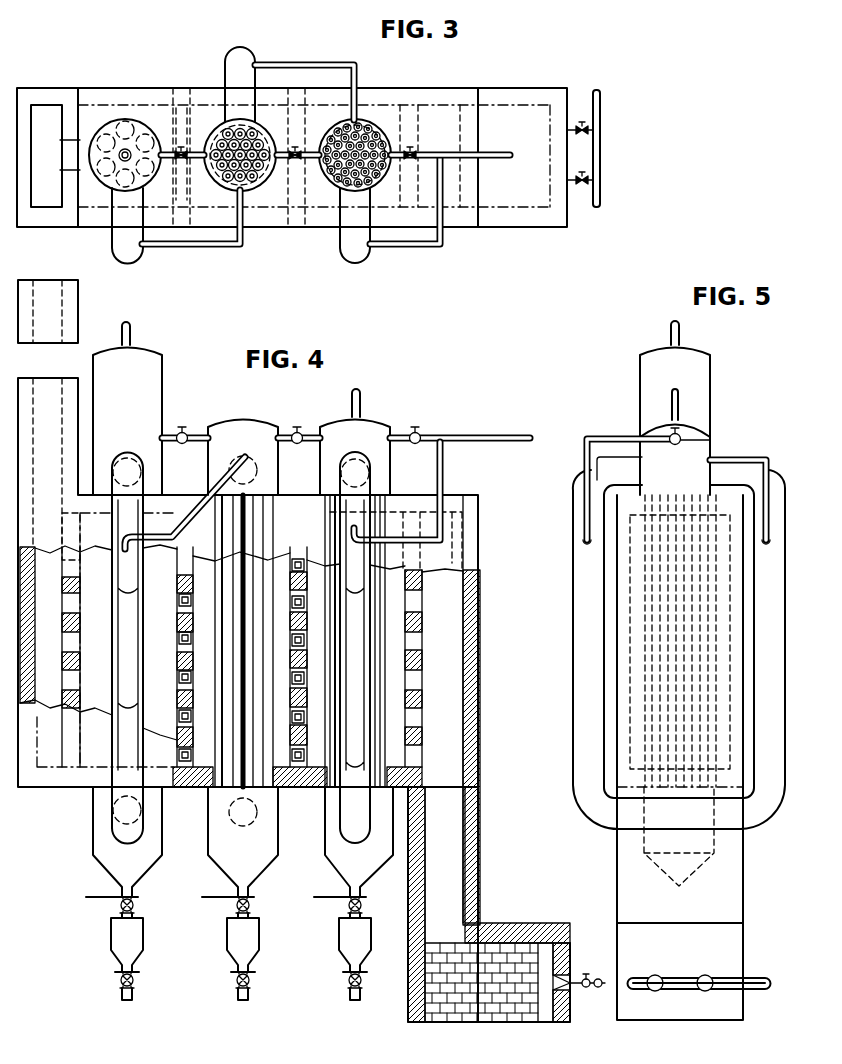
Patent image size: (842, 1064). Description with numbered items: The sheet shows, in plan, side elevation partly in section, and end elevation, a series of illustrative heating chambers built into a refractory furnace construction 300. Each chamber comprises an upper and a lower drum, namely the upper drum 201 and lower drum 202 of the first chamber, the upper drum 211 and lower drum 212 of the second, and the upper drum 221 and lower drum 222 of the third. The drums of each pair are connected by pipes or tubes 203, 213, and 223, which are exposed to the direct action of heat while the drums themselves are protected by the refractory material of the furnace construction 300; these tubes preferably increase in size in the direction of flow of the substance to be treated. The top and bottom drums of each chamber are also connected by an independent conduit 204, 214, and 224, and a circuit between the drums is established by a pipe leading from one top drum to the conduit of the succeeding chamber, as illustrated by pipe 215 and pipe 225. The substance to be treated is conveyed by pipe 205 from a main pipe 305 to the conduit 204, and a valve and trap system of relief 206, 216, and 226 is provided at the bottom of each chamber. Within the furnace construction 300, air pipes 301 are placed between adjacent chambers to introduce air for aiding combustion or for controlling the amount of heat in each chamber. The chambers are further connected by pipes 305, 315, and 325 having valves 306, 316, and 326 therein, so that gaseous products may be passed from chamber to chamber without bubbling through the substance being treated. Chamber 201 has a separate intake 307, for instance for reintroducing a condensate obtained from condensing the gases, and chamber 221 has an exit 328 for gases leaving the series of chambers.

In FIG. 3, the upper drum 201 is at (374, 184).
In FIG. 4, the upper drum 201 is at (362, 424).
In FIG. 5, the upper drum 201 is at (700, 445).
In FIG. 4, the lower drum 202 is at (350, 866).
In FIG. 5, the lower drum 202 is at (650, 838).
In FIG. 3, the pipes or tubes 203 is at (366, 120).
In FIG. 4, the pipes or tubes 203 is at (380, 710).
In FIG. 5, the pipes or tubes 203 is at (655, 570).
In FIG. 3, the independent conduit 204 is at (358, 253).
In FIG. 4, the independent conduit 204 is at (372, 470).
In FIG. 5, the independent conduit 204 is at (580, 655).
In FIG. 3, the pipe 205 is at (428, 248).
In FIG. 4, the pipe 205 is at (450, 477).
In FIG. 5, the pipe 205 is at (628, 440).
In FIG. 4, the valve and trap system of relief 206 is at (350, 938).
In FIG. 3, the upper drum 211 is at (264, 183).
In FIG. 4, the upper drum 211 is at (246, 424).
In FIG. 4, the lower drum 212 is at (232, 866).
In FIG. 3, the pipes or tubes 213 is at (262, 128).
In FIG. 4, the pipes or tubes 213 is at (262, 510).
In FIG. 3, the independent conduit 214 is at (241, 58).
In FIG. 4, the independent conduit 214 is at (252, 466).
In FIG. 5, the independent conduit 214 is at (775, 836).
In FIG. 3, the pipe 215 is at (318, 66).
In FIG. 4, the pipe 215 is at (360, 478).
In FIG. 5, the pipe 215 is at (755, 463).
In FIG. 4, the valve and trap system of relief 216 is at (236, 938).
In FIG. 3, the upper drum 221 is at (147, 182).
In FIG. 4, the upper drum 221 is at (140, 352).
In FIG. 5, the upper drum 221 is at (700, 380).
In FIG. 4, the lower drum 222 is at (105, 845).
In FIG. 3, the pipes or tubes 223 is at (123, 128).
In FIG. 4, the pipes or tubes 223 is at (110, 705).
In FIG. 3, the independent conduit 224 is at (128, 255).
In FIG. 4, the independent conduit 224 is at (136, 470).
In FIG. 3, the pipe 225 is at (216, 248).
In FIG. 4, the valve and trap system of relief 226 is at (120, 938).
In FIG. 4, the furnace construction 300 is at (482, 628).
In FIG. 3, the air pipes 301 is at (182, 112).
In FIG. 4, the air pipes 301 is at (186, 787).
In FIG. 3, the pipe 305 is at (497, 152).
In FIG. 4, the pipe 305 is at (485, 438).
In FIG. 3, the valve 306 is at (413, 150).
In FIG. 4, the valve 306 is at (420, 432).
In FIG. 4, the separate intake 307 is at (358, 395).
In FIG. 3, the pipe 315 is at (264, 192).
In FIG. 4, the pipe 315 is at (282, 436).
In FIG. 3, the valve 316 is at (296, 150).
In FIG. 4, the valve 316 is at (302, 431).
In FIG. 3, the pipe 325 is at (176, 151).
In FIG. 4, the pipe 325 is at (195, 436).
In FIG. 3, the valve 326 is at (181, 150).
In FIG. 4, the valve 326 is at (178, 432).
In FIG. 4, the exit 328 is at (130, 330).